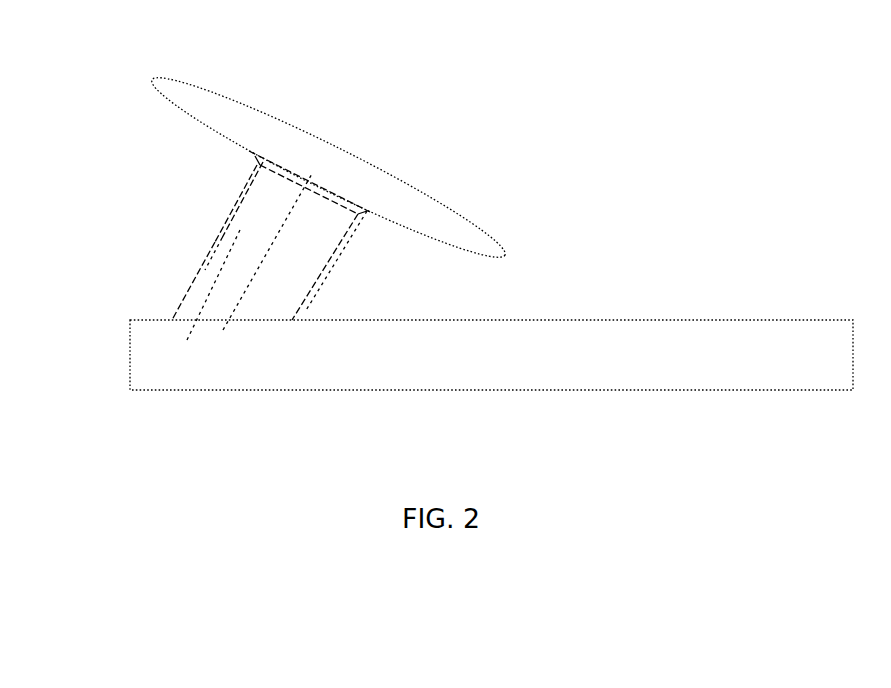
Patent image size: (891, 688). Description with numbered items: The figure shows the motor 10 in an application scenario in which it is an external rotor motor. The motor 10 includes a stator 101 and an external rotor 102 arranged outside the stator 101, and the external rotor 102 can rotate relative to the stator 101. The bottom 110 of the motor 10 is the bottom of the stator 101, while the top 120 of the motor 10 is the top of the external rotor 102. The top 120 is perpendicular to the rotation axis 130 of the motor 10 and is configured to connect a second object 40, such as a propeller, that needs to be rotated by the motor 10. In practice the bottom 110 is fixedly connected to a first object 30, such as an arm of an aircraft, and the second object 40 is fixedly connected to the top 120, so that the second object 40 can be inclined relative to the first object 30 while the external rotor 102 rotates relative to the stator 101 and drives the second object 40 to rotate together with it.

The motor 10 is at (95, 132).
The stator 101 is at (240, 265).
The external rotor 102 is at (248, 178).
The bottom 110 is at (203, 323).
The top 120 is at (289, 172).
The rotation axis 130 is at (257, 277).
The first object 30 is at (680, 352).
The second object 40 is at (343, 170).